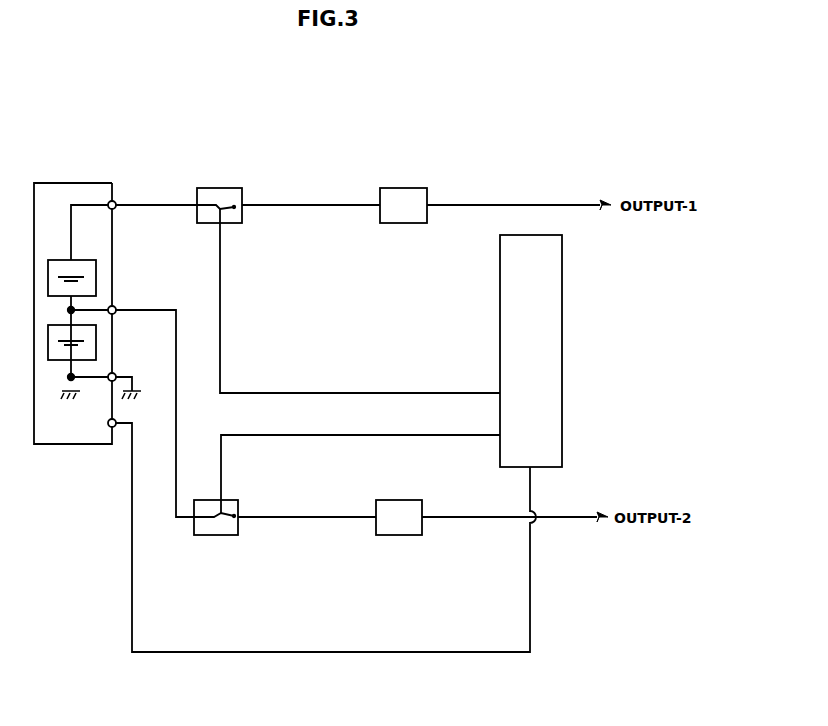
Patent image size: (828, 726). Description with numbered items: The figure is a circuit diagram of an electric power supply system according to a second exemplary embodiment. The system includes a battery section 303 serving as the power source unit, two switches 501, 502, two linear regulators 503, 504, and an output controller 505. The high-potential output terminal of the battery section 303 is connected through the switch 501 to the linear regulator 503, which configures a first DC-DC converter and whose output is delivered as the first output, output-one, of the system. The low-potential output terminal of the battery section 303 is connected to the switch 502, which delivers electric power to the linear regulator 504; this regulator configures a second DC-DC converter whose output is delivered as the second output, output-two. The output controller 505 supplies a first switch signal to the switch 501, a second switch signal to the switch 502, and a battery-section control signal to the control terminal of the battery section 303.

The battery section 303 is at (66, 444).
The switch 501 is at (234, 188).
The switch 502 is at (228, 500).
The linear regulator 503 is at (405, 188).
The linear regulator 504 is at (405, 500).
The output controller 505 is at (562, 258).